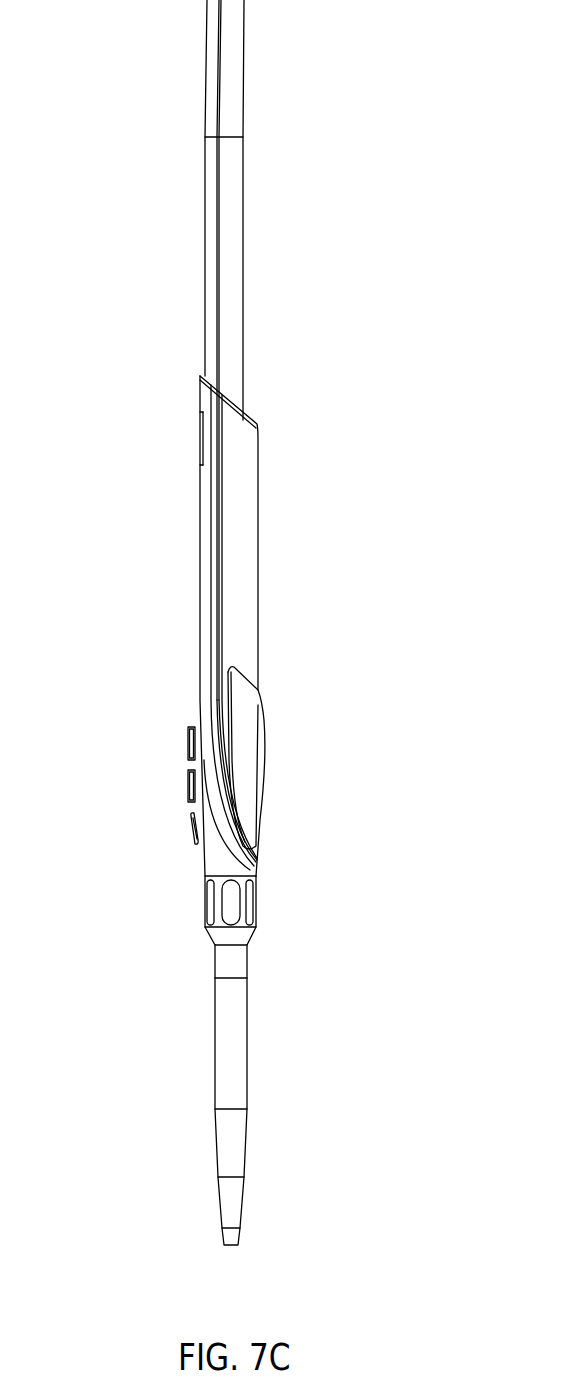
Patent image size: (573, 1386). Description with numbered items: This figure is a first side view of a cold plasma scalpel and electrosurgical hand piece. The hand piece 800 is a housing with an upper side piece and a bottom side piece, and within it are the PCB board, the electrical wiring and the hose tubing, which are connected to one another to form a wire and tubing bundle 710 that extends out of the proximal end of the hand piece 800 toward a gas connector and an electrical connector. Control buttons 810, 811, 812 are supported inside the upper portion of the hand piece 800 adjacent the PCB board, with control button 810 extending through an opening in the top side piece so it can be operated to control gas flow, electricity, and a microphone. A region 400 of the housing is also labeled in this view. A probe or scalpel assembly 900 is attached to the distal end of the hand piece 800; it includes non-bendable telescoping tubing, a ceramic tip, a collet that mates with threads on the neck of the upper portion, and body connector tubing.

The wire and tubing bundle 710 is at (223, 327).
The hand piece 800 is at (203, 593).
The grip 400 is at (245, 599).
The control button 812 is at (188, 735).
The control button 811 is at (188, 790).
The control button 810 is at (190, 828).
The scalpel assembly 900 is at (227, 1017).